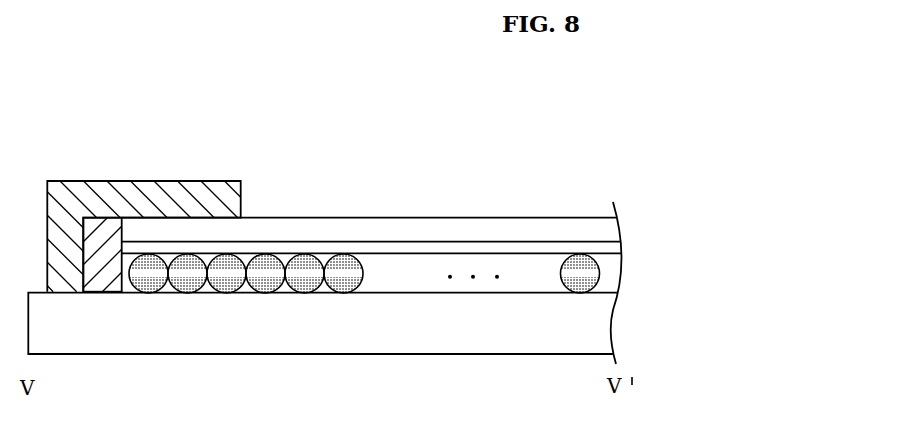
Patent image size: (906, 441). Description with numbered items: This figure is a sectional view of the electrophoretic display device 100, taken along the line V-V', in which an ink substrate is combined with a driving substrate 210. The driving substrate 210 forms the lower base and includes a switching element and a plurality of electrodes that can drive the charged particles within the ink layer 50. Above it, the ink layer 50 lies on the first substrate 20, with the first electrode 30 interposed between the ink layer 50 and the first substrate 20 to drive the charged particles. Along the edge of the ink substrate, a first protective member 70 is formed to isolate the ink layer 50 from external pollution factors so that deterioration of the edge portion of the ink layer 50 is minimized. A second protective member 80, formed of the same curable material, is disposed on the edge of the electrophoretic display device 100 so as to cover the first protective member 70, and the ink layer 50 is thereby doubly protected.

The electrophoretic display device 100 is at (94, 102).
The first substrate 20 is at (486, 225).
The first electrode 30 is at (444, 248).
The ink layer 50 is at (610, 272).
The first protective member 70 is at (104, 278).
The second protective member 80 is at (167, 193).
The driving substrate 210 is at (182, 337).